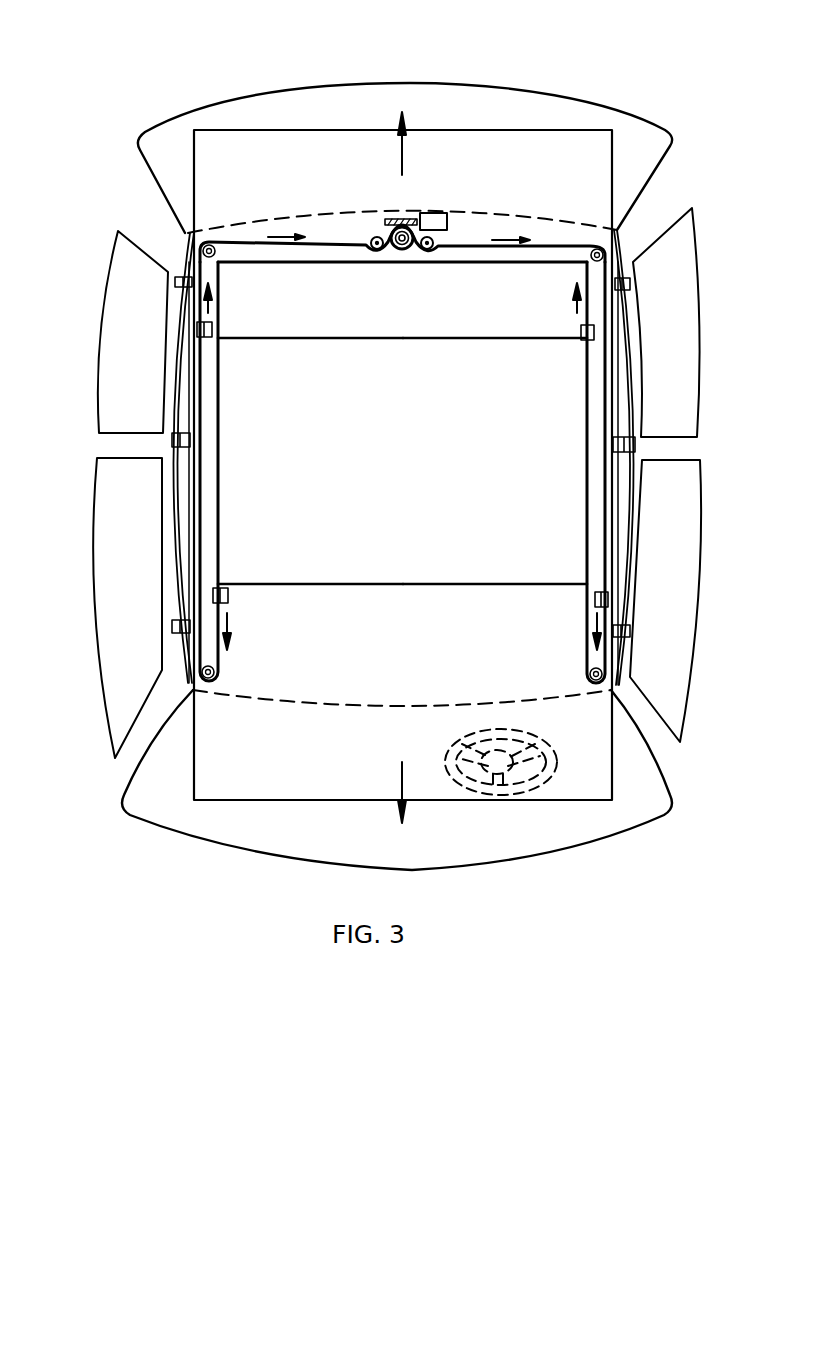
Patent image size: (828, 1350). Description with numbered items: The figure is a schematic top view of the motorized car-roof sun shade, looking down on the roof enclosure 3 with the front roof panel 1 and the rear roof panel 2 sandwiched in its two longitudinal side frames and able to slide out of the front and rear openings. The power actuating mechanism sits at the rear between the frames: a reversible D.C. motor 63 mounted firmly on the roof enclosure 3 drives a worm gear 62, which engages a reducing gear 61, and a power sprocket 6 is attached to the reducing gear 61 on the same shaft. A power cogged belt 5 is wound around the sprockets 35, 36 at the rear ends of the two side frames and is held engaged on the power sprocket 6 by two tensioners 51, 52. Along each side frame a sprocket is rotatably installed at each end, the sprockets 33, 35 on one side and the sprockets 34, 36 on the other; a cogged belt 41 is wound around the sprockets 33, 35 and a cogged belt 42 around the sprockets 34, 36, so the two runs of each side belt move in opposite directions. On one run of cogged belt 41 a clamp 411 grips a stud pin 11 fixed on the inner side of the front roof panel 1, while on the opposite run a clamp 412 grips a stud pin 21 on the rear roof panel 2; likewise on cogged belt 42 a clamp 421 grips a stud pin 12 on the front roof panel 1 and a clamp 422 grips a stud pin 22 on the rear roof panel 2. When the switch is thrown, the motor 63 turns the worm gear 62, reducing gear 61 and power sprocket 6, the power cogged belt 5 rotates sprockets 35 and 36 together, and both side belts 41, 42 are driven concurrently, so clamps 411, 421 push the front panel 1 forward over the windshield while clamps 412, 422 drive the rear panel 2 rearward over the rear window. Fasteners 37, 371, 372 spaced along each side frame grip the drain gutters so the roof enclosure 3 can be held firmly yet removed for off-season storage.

The front roof panel 1 is at (588, 758).
The rear roof panel 2 is at (220, 160).
The roof enclosure 3 is at (189, 550).
The power cogged belt 5 is at (268, 241).
The power sprocket 6 is at (395, 251).
The reducing gear 61 is at (410, 251).
The worm gear 62 is at (412, 219).
The reversible D.C. motor 63 is at (440, 213).
The tensioner 51 is at (372, 237).
The tensioner 52 is at (432, 237).
The sprocket 33 is at (172, 670).
The sprocket 34 is at (603, 674).
The sprocket 35 is at (202, 252).
The sprocket 36 is at (598, 248).
The cogged belt 41 is at (200, 497).
The cogged belt 42 is at (605, 490).
The stud pin 21 is at (212, 328).
The stud pin 22 is at (581, 328).
The stud pin 11 is at (228, 598).
The stud pin 12 is at (594, 598).
The clamp 411 is at (213, 595).
The clamp 412 is at (197, 328).
The clamp 421 is at (608, 598).
The clamp 422 is at (594, 330).
The fastener 37 is at (630, 630).
The fastener 371 is at (635, 447).
The fastener 372 is at (630, 283).